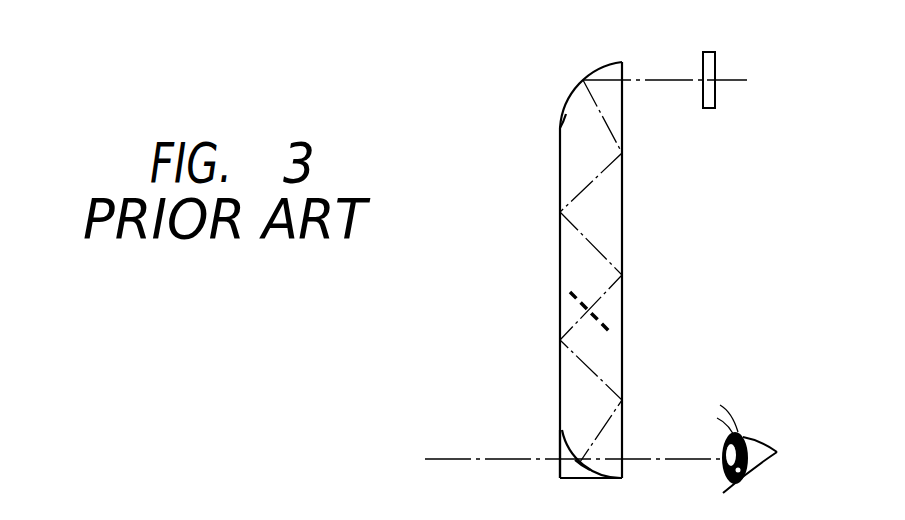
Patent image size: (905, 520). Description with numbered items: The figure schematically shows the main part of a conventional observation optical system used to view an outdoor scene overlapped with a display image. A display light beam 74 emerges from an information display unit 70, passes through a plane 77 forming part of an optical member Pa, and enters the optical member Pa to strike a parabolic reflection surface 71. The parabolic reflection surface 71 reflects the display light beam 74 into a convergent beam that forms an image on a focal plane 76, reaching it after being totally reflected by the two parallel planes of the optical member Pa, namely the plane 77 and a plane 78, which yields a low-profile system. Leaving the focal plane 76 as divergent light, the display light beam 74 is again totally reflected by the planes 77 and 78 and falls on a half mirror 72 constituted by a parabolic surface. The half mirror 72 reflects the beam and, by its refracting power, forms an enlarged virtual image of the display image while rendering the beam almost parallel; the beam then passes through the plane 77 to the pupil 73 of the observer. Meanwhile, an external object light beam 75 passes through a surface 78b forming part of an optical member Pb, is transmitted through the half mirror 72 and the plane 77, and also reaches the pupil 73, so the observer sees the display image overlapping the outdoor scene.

The information display unit 70 is at (717, 60).
The parabolic reflection surface 71 is at (571, 90).
The half mirror 72 is at (562, 443).
The pupil 73 is at (758, 442).
The display light beam 74 is at (660, 78).
The external object light beam 75 is at (435, 459).
The focal plane 76 is at (582, 305).
The plane 77 is at (623, 181).
The plane 78 is at (560, 184).
The surface 78b is at (562, 455).
The optical member Pa is at (565, 133).
The optical member Pb is at (580, 470).